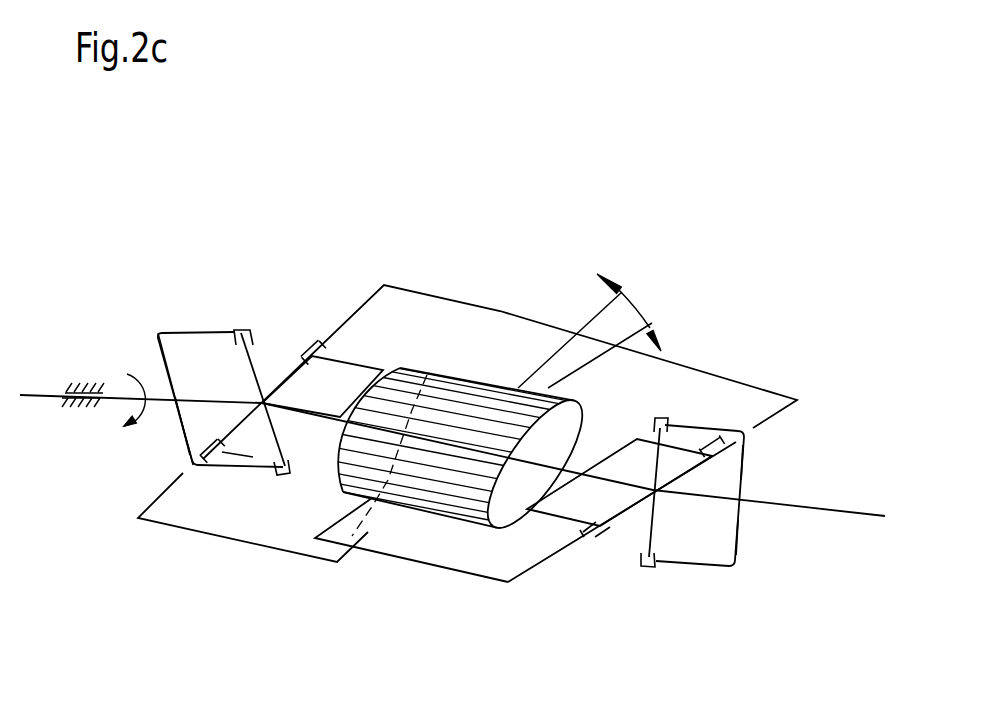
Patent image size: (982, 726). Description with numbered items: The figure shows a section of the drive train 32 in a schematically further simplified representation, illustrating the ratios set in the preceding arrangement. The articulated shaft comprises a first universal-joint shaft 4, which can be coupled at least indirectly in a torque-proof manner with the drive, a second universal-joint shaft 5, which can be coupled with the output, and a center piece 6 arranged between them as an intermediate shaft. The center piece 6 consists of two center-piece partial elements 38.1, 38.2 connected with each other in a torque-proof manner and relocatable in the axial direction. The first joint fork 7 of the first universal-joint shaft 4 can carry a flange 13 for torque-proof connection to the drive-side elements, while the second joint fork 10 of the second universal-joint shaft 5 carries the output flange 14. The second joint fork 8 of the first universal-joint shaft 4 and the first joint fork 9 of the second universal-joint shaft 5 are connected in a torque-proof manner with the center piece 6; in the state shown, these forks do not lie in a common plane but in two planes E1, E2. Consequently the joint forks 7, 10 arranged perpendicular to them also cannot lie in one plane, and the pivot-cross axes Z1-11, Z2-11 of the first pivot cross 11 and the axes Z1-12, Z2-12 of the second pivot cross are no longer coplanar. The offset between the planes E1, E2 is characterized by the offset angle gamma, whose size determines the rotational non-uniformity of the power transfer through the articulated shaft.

The first universal-joint shaft 4 is at (193, 305).
The second universal-joint shaft 5 is at (747, 368).
The center piece 6 is at (420, 365).
The first joint fork 7 is at (187, 440).
The second joint fork 8 is at (355, 363).
The first joint fork 9 is at (613, 445).
The second joint fork 10 is at (744, 470).
The first pivot cross 11 is at (276, 352).
The flange 13 is at (171, 388).
The output flange 14 is at (745, 540).
The drive train 32 is at (491, 262).
The center-piece partial element 38.1 is at (437, 370).
The center-piece partial element 38.2 is at (440, 492).
The pivot-cross axis Z1-11 is at (252, 368).
The pivot-cross axis Z2-11 is at (283, 378).
The pivot-cross axis Z1-12 is at (618, 530).
The pivot-cross axis Z2-12 is at (652, 528).
The plane E1 is at (245, 507).
The plane E2 is at (436, 548).
The offset angle gamma is at (589, 331).